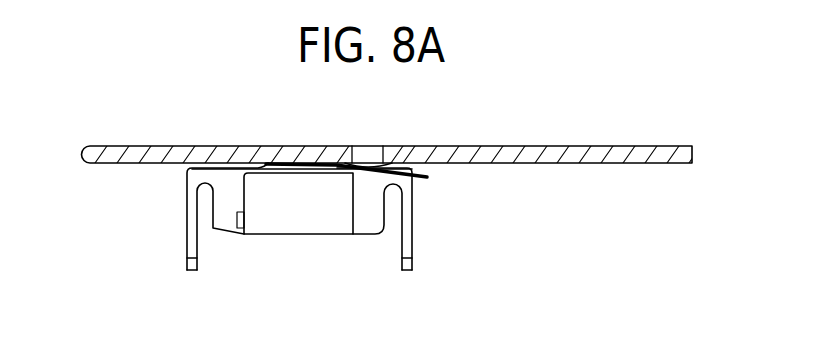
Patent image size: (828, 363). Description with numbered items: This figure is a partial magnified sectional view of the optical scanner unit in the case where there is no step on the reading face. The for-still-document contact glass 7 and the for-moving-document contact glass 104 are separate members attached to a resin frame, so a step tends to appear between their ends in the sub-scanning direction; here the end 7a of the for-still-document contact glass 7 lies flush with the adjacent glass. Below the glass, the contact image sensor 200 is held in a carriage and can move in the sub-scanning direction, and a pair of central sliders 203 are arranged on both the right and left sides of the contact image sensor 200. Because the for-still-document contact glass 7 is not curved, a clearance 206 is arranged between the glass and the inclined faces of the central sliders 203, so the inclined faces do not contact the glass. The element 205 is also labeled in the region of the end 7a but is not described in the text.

The for-still-document contact glass 7 is at (538, 157).
The end of the for-still-document contact glass 7a is at (383, 160).
The for-moving-document contact glass 104 is at (173, 155).
The contact image sensor 200 is at (297, 207).
The central sliders 203 is at (220, 228).
The solder 205 is at (362, 134).
The clearance 206 is at (427, 181).